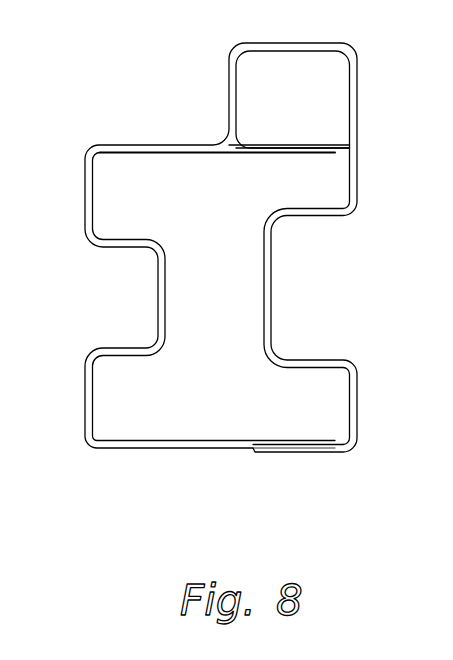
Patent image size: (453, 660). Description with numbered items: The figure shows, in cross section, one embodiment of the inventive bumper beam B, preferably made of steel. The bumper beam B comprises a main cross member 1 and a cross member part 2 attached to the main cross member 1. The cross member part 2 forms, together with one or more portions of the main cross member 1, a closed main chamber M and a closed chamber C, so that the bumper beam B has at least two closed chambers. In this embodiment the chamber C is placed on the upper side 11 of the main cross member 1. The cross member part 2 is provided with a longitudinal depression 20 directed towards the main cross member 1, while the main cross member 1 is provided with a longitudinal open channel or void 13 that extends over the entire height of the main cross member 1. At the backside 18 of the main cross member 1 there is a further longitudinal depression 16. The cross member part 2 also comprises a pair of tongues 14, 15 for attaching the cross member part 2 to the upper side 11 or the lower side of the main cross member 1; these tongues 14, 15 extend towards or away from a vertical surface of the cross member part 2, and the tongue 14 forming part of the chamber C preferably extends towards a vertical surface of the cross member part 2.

The main cross member 1 is at (93, 437).
The cross member part 2 is at (386, 182).
The upper side 11 is at (186, 144).
The longitudinal open channel or void 13 is at (257, 211).
The tongue 14 is at (316, 140).
The tongue 15 is at (314, 458).
The longitudinal depression 16 is at (157, 298).
The backside 18 is at (82, 218).
The longitudinal depression 20 is at (304, 292).
The bumper beam B is at (142, 106).
The closed chamber C is at (305, 107).
The closed main chamber M is at (222, 362).